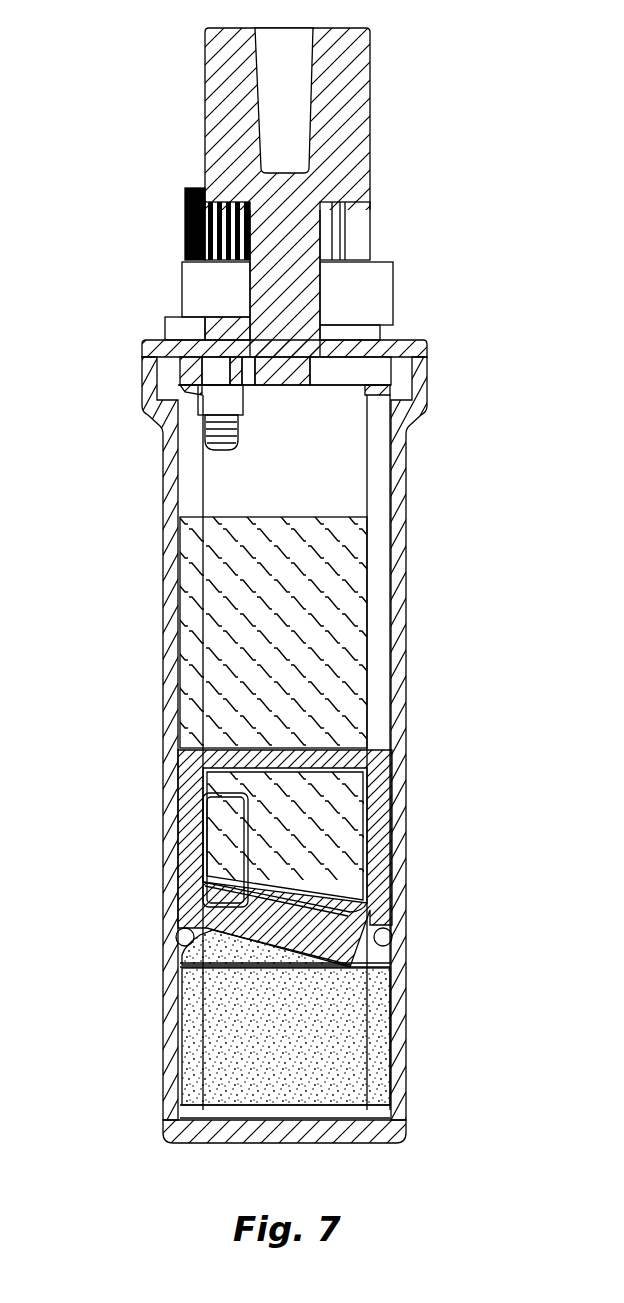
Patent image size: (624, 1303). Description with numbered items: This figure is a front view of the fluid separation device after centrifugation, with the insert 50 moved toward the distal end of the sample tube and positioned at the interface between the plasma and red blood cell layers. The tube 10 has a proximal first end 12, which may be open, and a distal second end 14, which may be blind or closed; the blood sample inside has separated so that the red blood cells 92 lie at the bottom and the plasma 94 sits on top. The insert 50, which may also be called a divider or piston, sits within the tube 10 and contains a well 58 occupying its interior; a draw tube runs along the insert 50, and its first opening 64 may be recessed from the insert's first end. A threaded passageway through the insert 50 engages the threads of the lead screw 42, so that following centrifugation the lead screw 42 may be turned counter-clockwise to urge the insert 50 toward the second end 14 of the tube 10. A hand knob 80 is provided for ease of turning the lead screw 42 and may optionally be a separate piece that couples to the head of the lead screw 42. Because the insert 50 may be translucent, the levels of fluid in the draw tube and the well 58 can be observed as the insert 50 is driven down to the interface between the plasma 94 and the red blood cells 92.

The tube 10 is at (163, 644).
The first end 12 is at (142, 373).
The second end 14 is at (368, 1143).
The lead screw 42 is at (312, 372).
The insert 50 is at (383, 822).
The well 58 is at (297, 857).
The first opening 64 is at (218, 793).
The hand knob 80 is at (370, 77).
The red blood cells 92 is at (350, 1067).
The plasma 94 is at (350, 667).